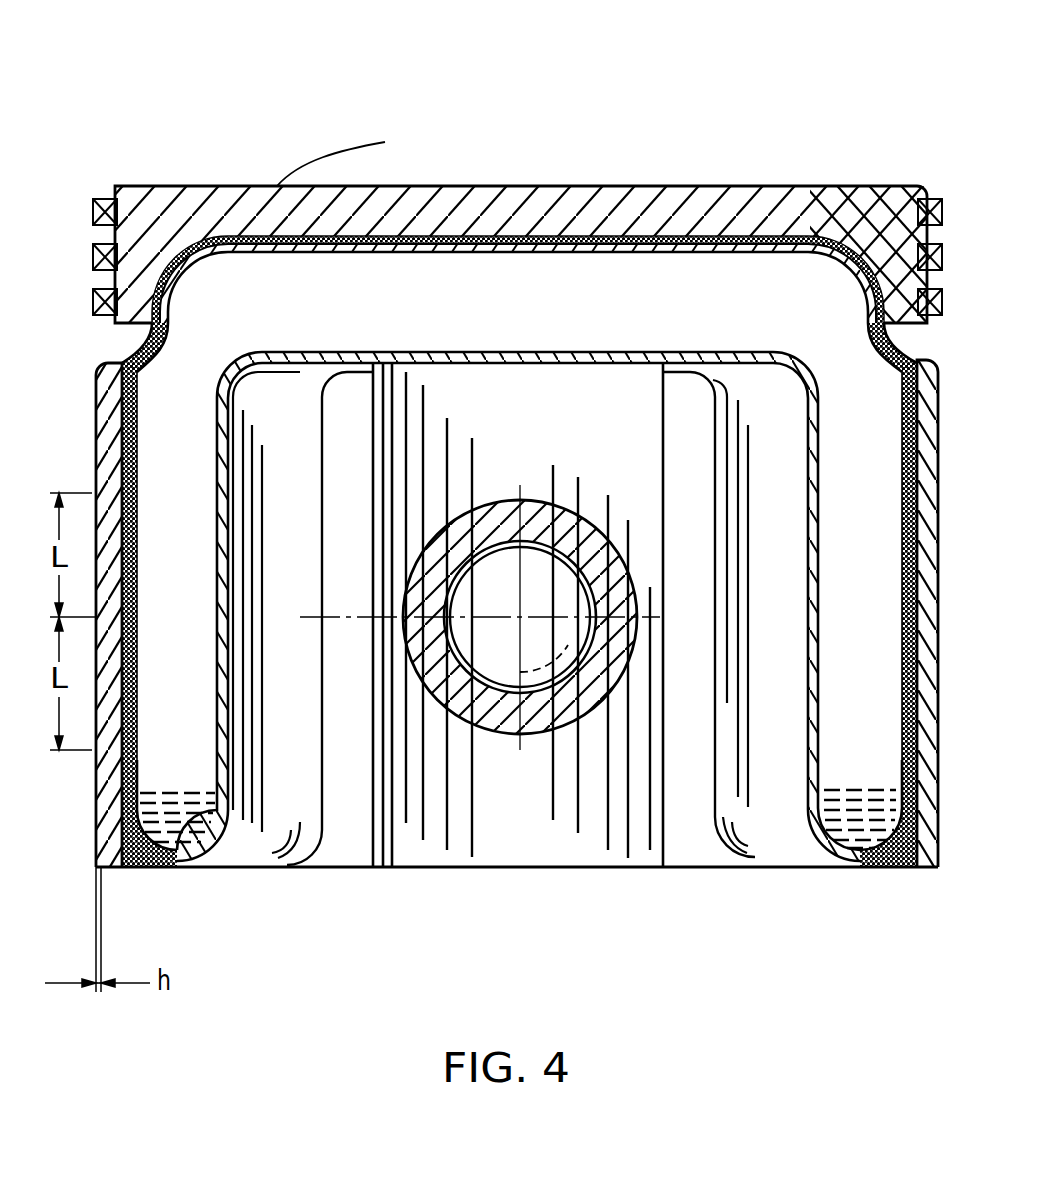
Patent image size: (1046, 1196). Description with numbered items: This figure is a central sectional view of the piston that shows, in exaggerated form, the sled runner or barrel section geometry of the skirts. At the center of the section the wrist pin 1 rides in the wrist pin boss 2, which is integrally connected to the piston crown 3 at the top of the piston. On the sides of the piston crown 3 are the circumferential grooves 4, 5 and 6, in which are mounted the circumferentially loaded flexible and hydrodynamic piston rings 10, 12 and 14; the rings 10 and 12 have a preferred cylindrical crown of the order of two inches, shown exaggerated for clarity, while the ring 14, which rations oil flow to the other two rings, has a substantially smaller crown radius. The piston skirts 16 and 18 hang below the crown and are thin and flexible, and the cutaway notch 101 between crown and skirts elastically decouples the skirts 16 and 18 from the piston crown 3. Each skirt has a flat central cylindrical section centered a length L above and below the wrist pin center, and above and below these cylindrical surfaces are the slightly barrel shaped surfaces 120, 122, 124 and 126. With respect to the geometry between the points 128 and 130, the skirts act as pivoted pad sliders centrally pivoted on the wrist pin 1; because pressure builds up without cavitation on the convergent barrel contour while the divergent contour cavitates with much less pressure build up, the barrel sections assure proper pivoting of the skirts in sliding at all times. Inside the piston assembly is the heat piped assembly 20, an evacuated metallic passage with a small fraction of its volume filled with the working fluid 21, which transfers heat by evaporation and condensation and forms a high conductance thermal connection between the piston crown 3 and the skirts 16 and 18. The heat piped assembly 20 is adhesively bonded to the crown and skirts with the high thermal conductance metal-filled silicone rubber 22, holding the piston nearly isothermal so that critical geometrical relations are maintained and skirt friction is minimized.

The wrist pin 1 is at (498, 513).
The wrist pin boss 2 is at (513, 840).
The piston crown 3 is at (565, 200).
The circumferential groove 4 is at (878, 184).
The circumferential groove 5 is at (850, 184).
The circumferential groove 6 is at (820, 184).
The piston ring 10 is at (137, 184).
The piston ring 12 is at (170, 238).
The piston ring 14 is at (252, 237).
The piston skirt 16 is at (123, 588).
The piston skirt 18 is at (933, 580).
The heat piped assembly 20 is at (283, 818).
The working fluid 21 is at (180, 830).
The metal-filled silicone rubber 22 is at (133, 867).
The cutaway notch 101 is at (135, 345).
The barrel shaped surface 120 is at (127, 400).
The barrel shaped surface 122 is at (125, 767).
The barrel shaped surface 124 is at (928, 778).
The barrel shaped surface 126 is at (928, 403).
The skirt geometry reference point 128 is at (127, 708).
The skirt geometry reference point 130 is at (128, 481).